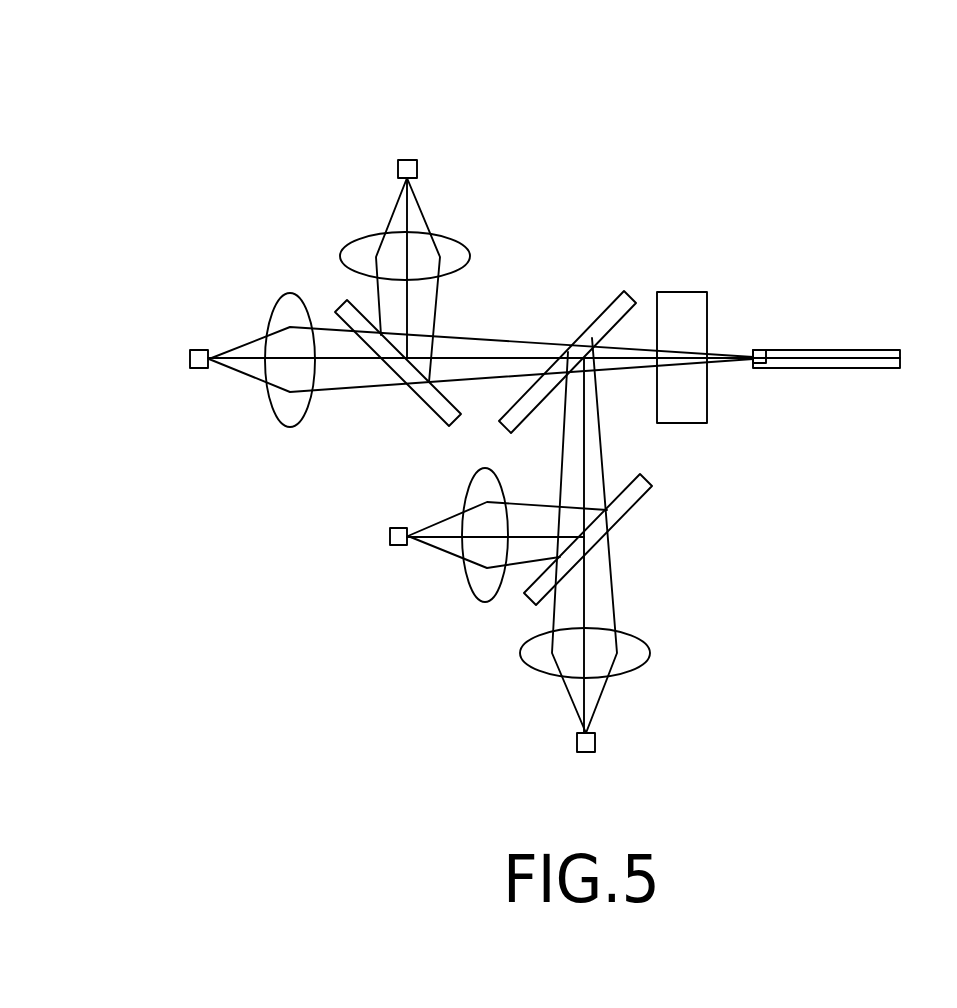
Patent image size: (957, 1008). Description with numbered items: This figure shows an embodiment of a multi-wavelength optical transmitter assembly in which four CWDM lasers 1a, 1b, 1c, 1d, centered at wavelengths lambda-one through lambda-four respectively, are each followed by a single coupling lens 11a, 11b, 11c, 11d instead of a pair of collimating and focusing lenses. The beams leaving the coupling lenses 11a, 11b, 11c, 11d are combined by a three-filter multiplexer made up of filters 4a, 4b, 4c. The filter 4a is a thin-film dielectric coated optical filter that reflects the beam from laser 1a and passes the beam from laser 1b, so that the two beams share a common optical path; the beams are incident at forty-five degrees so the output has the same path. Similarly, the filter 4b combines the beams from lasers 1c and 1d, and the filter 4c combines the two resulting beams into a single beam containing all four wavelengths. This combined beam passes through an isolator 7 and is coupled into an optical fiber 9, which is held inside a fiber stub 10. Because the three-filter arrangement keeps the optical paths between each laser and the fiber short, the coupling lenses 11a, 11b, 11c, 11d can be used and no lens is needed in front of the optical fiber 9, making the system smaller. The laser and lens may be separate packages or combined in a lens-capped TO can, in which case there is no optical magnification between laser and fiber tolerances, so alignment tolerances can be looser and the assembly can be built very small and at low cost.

The CWDM laser 1a is at (402, 160).
The CWDM laser 1b is at (190, 358).
The CWDM laser 1c is at (390, 540).
The CWDM laser 1d is at (577, 742).
The coupling lens 11a is at (353, 238).
The coupling lens 11b is at (282, 308).
The coupling lens 11c is at (463, 572).
The coupling lens 11d is at (520, 650).
The filter 4a is at (432, 405).
The filter 4b is at (635, 502).
The filter 4c is at (607, 305).
The isolator 7 is at (689, 303).
The optical fiber 9 is at (760, 347).
The fiber stub 10 is at (863, 347).